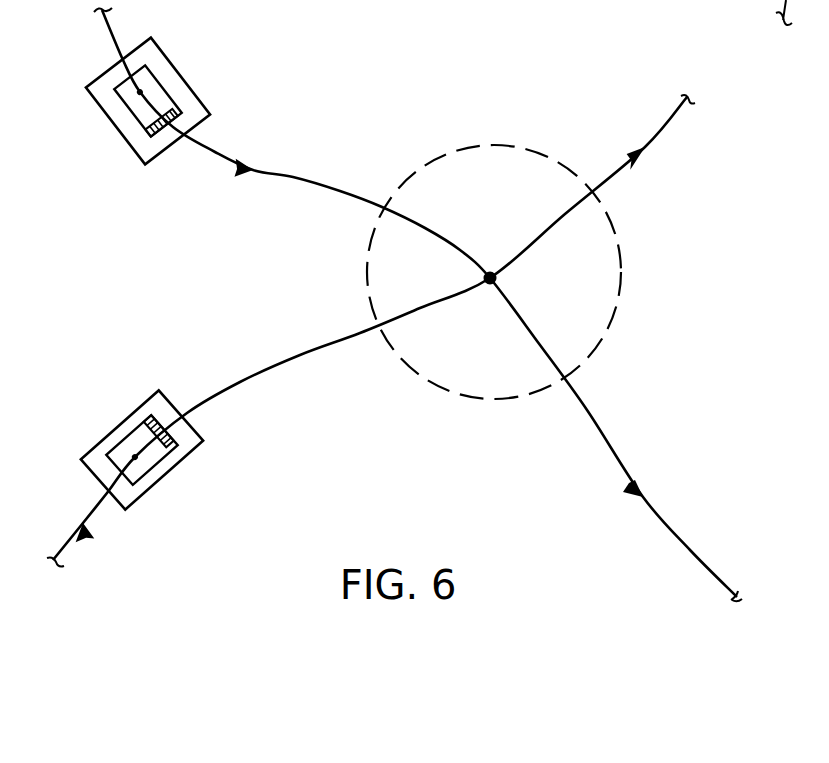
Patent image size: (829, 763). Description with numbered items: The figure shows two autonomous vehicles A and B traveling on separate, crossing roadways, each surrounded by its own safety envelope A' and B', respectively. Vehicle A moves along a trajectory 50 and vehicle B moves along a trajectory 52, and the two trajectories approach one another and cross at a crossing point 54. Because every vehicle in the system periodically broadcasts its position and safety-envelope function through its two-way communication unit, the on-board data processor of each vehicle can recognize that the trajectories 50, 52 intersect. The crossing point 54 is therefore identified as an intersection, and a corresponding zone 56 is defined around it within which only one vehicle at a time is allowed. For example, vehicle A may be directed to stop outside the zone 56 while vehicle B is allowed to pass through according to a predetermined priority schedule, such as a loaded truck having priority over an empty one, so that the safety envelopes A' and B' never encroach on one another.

The trajectory 50 is at (297, 177).
The trajectory 52 is at (655, 142).
The crossing point 54 is at (497, 280).
The zone 56 is at (597, 340).
The vehicle A is at (111, 121).
The safety envelope A' is at (148, 146).
The vehicle B is at (173, 475).
The safety envelope B' is at (182, 449).